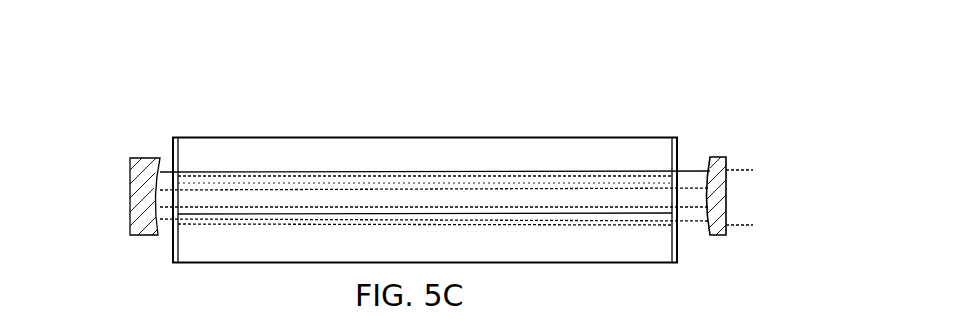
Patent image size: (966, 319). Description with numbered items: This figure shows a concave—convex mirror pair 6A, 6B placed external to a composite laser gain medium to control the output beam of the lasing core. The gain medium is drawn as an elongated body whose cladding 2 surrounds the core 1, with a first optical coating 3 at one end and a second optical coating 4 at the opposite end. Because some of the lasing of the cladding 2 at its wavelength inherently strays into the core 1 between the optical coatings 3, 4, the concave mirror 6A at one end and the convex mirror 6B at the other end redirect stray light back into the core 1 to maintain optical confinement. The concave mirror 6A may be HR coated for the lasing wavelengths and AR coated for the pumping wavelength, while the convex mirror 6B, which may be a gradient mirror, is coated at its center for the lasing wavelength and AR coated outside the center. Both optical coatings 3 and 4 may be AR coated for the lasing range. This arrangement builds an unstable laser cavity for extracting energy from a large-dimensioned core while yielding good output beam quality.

The core 1 is at (375, 157).
The cladding 2 is at (502, 140).
The first optical coating 3 is at (171, 137).
The second optical coating 4 is at (676, 163).
The concave mirror 6A is at (130, 190).
The convex mirror 6B is at (725, 155).